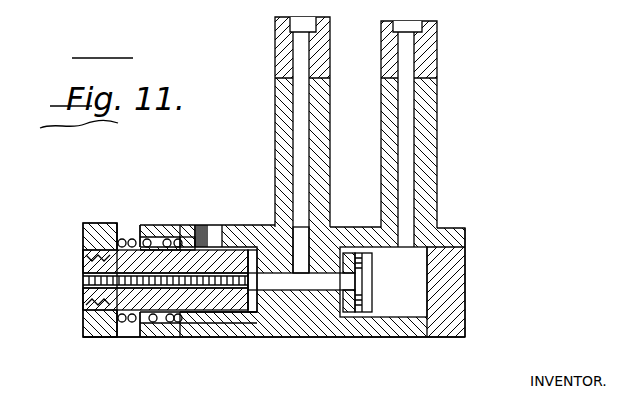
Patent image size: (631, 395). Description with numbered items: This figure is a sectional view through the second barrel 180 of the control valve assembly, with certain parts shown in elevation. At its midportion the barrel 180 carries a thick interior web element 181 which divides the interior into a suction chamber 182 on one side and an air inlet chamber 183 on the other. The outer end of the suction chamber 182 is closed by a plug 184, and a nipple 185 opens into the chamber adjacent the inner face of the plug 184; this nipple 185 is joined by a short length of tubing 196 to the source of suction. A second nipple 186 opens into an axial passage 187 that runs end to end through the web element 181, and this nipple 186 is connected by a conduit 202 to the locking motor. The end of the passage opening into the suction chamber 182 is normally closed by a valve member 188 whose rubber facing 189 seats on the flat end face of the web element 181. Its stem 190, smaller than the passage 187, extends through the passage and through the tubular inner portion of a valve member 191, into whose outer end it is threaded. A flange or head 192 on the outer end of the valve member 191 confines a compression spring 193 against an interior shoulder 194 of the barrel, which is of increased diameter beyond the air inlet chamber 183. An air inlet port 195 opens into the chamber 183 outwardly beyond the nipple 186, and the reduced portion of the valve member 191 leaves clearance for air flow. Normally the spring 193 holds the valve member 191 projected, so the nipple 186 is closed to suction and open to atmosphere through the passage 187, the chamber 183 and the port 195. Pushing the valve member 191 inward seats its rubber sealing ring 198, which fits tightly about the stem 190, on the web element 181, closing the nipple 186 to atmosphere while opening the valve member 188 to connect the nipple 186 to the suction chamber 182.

The second barrel 180 is at (278, 350).
The interior web element 181 is at (303, 312).
The suction chamber 182 is at (410, 312).
The air inlet chamber 183 is at (205, 312).
The plug 184 is at (455, 270).
The nipple 185 is at (437, 128).
The second nipple 186 is at (277, 127).
The axial passage 187 is at (327, 262).
The valve member 188 is at (357, 272).
The rubber facing 189 is at (346, 312).
The stem 190 is at (262, 247).
The valve member 191 is at (128, 322).
The flange or head 192 is at (88, 340).
The compression spring 193 is at (128, 238).
The interior shoulder 194 is at (182, 225).
The air inlet port 195 is at (210, 225).
The tubing 196 is at (437, 27).
The rubber sealing ring 198 is at (230, 333).
The conduit 202 is at (273, 22).